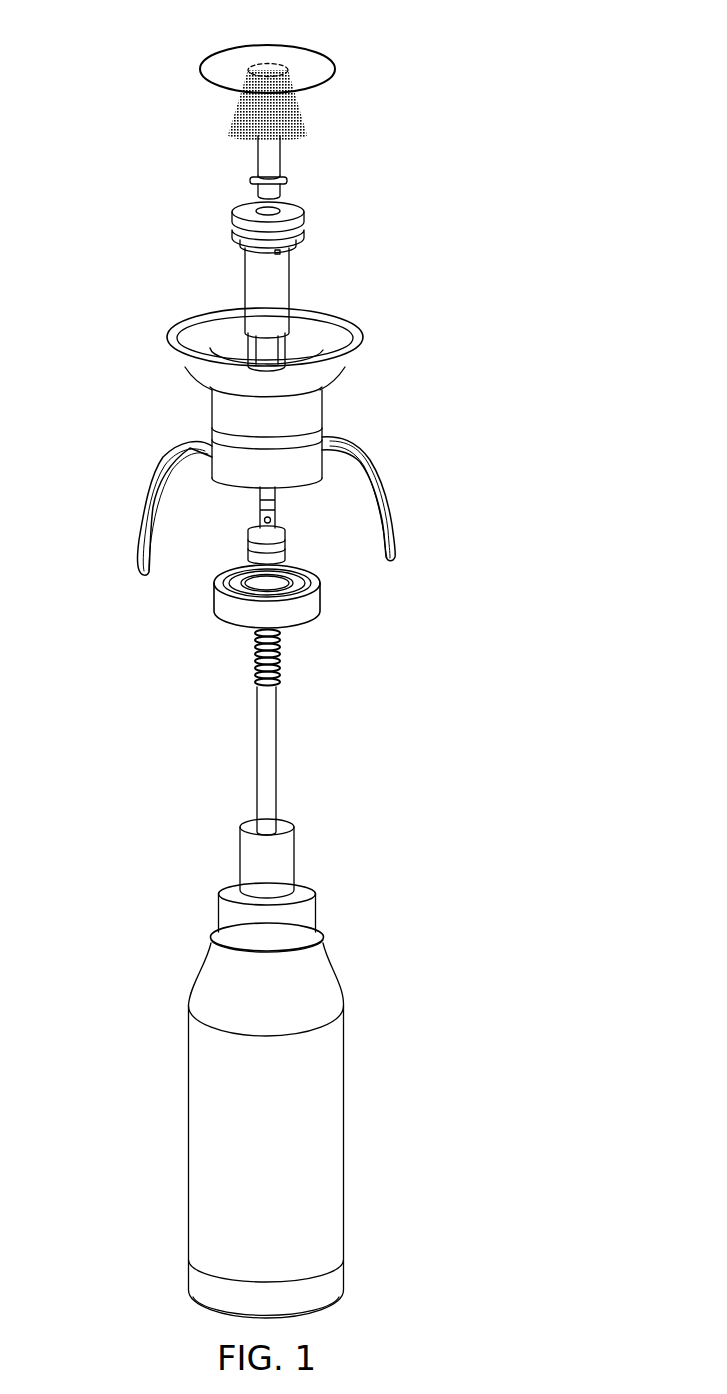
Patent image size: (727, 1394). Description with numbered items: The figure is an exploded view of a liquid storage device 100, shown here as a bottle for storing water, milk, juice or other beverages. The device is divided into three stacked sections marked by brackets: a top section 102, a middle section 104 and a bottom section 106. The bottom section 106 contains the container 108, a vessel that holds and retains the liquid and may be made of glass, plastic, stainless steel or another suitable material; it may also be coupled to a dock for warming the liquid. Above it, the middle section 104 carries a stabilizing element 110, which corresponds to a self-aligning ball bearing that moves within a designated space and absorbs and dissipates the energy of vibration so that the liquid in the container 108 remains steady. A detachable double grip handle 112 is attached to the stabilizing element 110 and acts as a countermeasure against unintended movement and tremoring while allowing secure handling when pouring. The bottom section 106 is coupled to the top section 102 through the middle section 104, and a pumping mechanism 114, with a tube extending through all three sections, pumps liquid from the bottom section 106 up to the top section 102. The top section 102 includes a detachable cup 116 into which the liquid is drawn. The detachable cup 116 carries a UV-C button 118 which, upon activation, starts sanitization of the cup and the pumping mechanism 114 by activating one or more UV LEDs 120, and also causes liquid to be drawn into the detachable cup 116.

The liquid storage device 100 is at (497, 28).
The top section 102 is at (131, 19).
The middle section 104 is at (130, 416).
The bottom section 106 is at (130, 827).
The container 108 is at (346, 1128).
The stabilizing element 110 is at (322, 600).
The double grip handle 112 is at (387, 497).
The pumping mechanism 114 is at (304, 211).
The detachable cup 116 is at (363, 330).
The UV-C button 118 is at (312, 68).
The UV LEDs 120 is at (258, 63).